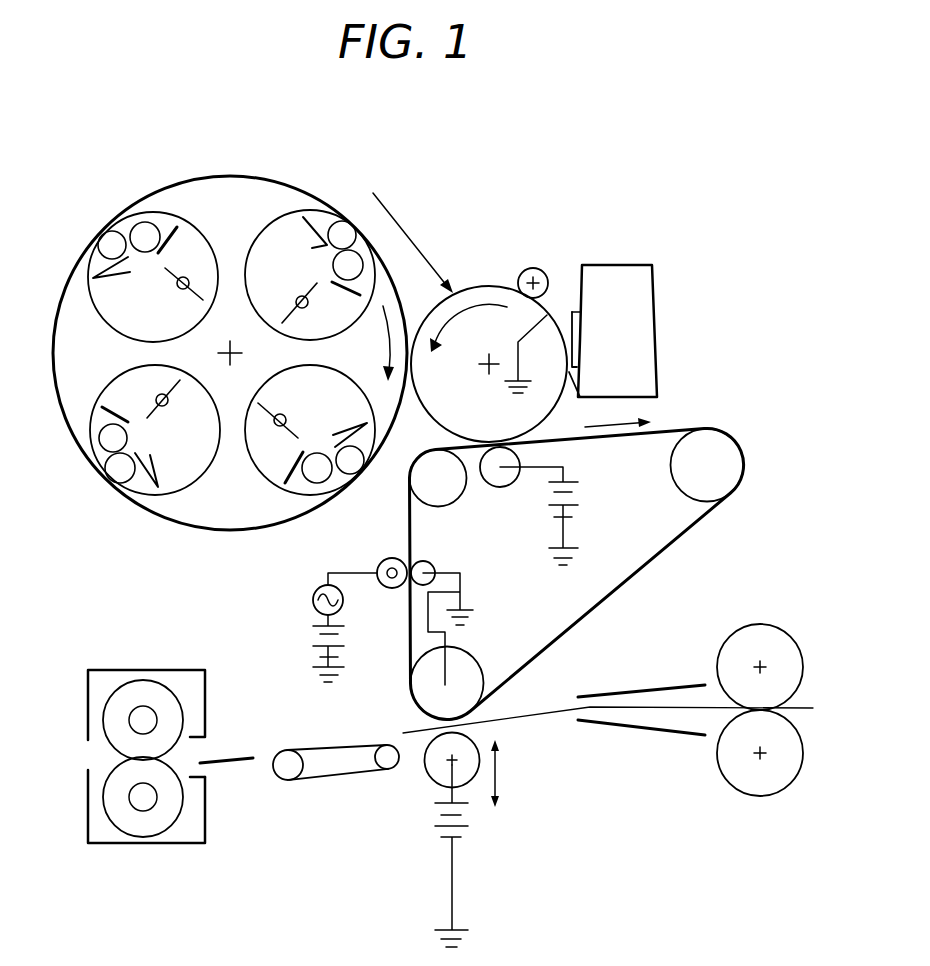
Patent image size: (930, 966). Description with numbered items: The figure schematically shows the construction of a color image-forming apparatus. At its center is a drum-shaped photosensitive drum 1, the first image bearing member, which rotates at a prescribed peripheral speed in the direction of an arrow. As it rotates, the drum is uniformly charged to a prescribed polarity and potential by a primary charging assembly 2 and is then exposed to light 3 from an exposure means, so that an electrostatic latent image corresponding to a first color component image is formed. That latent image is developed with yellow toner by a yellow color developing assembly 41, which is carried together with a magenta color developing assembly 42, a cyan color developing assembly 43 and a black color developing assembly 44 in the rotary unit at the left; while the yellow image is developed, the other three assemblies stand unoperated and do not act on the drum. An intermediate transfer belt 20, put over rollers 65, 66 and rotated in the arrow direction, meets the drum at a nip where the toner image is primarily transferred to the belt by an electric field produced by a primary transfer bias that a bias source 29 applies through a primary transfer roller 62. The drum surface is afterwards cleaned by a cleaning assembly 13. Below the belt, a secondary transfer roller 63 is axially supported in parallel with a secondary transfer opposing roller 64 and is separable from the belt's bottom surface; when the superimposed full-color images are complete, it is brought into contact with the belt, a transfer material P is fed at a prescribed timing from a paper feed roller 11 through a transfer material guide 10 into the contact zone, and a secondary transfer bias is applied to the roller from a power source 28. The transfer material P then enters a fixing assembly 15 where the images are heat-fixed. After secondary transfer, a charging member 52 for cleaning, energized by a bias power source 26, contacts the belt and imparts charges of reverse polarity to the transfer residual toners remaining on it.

The photosensitive drum 1 is at (483, 287).
The primary charging assembly 2 is at (542, 267).
The light 3 is at (387, 206).
The transfer material guide 10 is at (662, 735).
The paper feed roller 11 is at (757, 622).
The cleaning assembly 13 is at (645, 318).
The fixing assembly 15 is at (88, 698).
The intermediate transfer belt 20 is at (698, 527).
The bias power source 26 is at (310, 638).
The power source 28 is at (467, 822).
The bias source 29 is at (587, 496).
The yellow color developing assembly 41 is at (310, 210).
The magenta color developing assembly 42 is at (165, 212).
The cyan color developing assembly 43 is at (137, 495).
The black color developing assembly 44 is at (267, 480).
The charging member for cleaning 52 is at (390, 590).
The primary transfer roller 62 is at (500, 487).
The secondary transfer roller 63 is at (437, 778).
The secondary transfer opposing roller 64 is at (483, 675).
The roller 65 is at (730, 462).
The roller 66 is at (420, 490).
The transfer material P is at (542, 715).